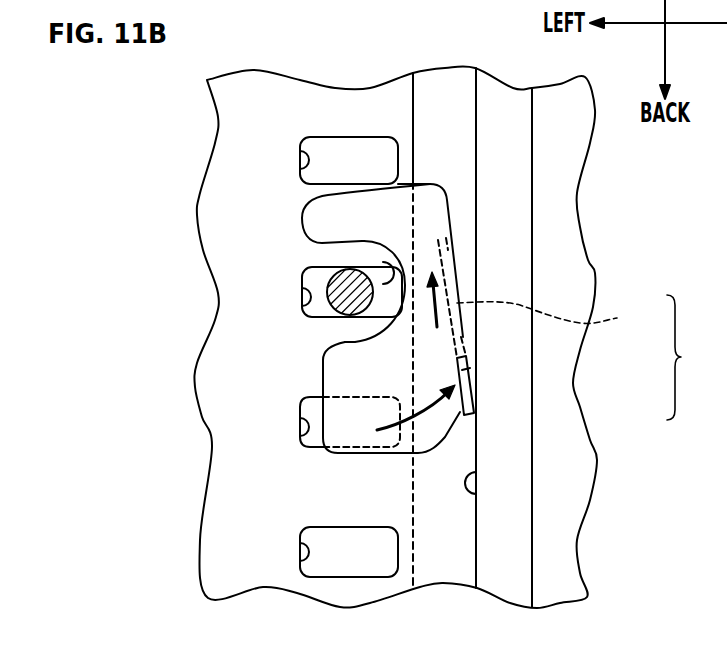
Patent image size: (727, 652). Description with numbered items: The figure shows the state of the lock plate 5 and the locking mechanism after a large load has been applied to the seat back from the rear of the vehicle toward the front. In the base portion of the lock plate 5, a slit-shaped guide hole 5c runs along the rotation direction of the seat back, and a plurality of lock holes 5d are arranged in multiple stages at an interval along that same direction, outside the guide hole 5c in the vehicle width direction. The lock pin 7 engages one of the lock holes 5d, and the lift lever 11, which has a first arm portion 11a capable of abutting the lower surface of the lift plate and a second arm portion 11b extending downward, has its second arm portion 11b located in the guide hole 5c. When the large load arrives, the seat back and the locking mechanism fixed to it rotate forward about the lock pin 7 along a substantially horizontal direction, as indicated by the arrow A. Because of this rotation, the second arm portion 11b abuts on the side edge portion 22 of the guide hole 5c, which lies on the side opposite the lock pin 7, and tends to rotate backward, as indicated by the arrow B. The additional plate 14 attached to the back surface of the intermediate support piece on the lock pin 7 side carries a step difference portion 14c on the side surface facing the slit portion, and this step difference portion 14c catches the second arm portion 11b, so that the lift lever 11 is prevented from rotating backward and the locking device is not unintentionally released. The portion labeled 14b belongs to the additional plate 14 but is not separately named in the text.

The lock plate 5 is at (333, 110).
The lock holes 5d is at (303, 174).
The guide hole 5c is at (482, 495).
The lock pin 7 is at (337, 275).
The additional plate 14 is at (437, 210).
The rod portion of latch 14b is at (405, 277).
The step difference portion 14c is at (455, 380).
The side edge portion 22 is at (520, 265).
The lift lever 11 is at (688, 357).
The first arm portion 11a is at (558, 319).
The second arm portion 11b is at (468, 385).
The arrow A is at (427, 405).
The arrow B is at (426, 332).